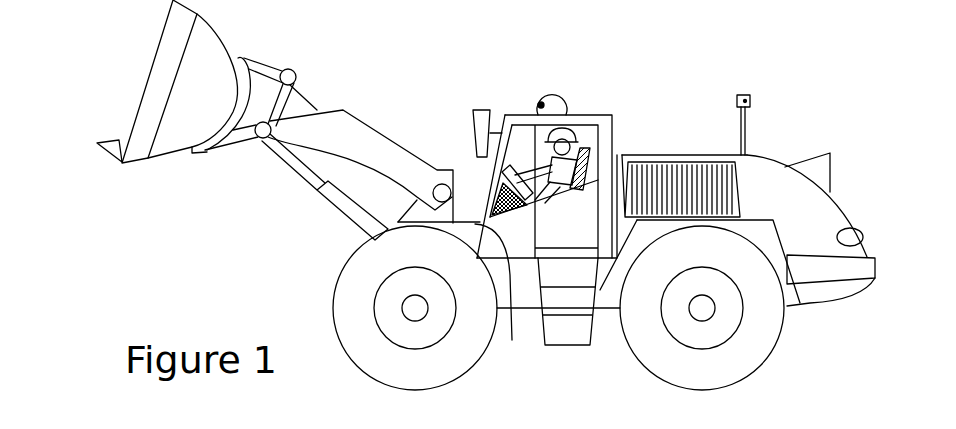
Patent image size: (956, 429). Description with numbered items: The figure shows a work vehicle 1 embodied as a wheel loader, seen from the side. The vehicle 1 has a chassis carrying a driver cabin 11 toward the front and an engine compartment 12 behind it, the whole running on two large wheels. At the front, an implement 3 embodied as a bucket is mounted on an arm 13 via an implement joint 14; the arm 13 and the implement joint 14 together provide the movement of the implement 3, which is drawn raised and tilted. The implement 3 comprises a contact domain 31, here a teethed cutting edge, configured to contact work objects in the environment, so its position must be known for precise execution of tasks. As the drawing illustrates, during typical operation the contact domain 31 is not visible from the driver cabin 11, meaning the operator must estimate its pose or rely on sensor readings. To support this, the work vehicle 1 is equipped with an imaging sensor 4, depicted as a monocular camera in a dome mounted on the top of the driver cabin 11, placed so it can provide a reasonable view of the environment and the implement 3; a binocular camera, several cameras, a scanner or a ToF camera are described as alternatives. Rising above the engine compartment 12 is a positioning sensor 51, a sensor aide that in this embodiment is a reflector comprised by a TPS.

The work vehicle 1 is at (452, 32).
The implement 3 is at (205, 103).
The imaging sensor 4 is at (549, 93).
The driver cabin 11 is at (580, 128).
The engine compartment 12 is at (708, 160).
The arm 13 is at (342, 110).
The implement joint 14 is at (240, 62).
The contact domain 31 is at (107, 136).
The positioning sensor 51 is at (740, 93).